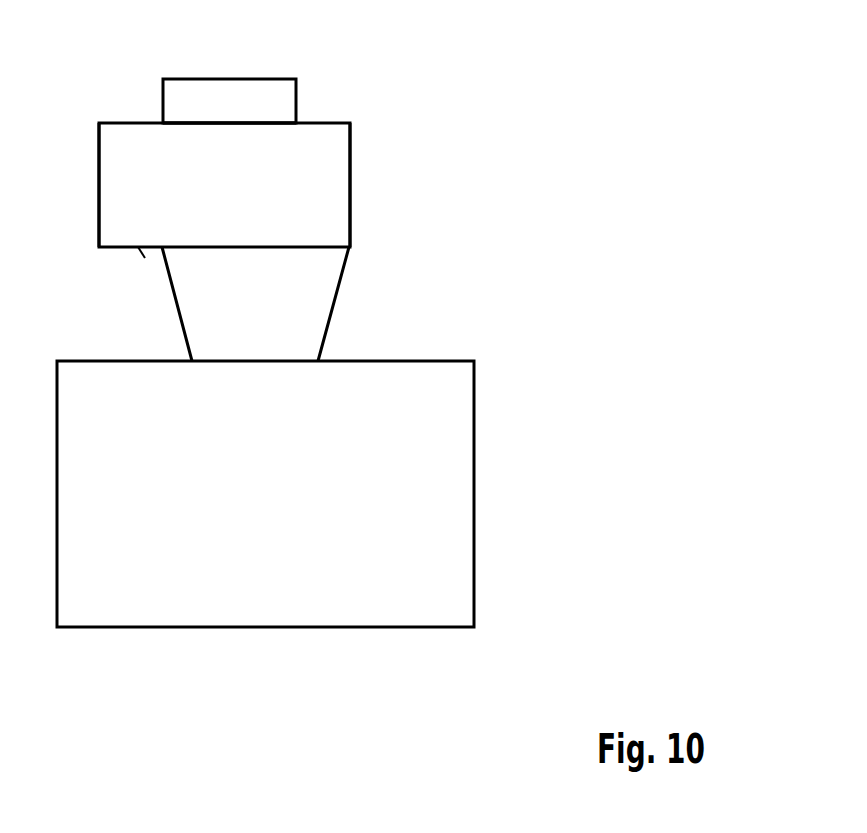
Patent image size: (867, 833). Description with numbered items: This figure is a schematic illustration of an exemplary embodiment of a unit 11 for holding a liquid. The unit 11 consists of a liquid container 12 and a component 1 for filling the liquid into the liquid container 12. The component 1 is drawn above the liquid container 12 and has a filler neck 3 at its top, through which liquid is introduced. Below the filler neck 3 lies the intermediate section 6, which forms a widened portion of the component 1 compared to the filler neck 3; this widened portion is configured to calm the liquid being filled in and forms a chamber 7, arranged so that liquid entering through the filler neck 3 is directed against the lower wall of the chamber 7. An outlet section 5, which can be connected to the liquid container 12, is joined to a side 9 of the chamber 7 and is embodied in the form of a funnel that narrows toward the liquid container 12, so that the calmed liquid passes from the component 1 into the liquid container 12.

The component 1 is at (369, 150).
The filler neck 3 is at (172, 99).
The outlet section 5 is at (309, 294).
The intermediate section 6 is at (314, 204).
The chamber 7 is at (141, 179).
The side 9 is at (138, 247).
The unit 11 is at (478, 85).
The liquid container 12 is at (440, 497).